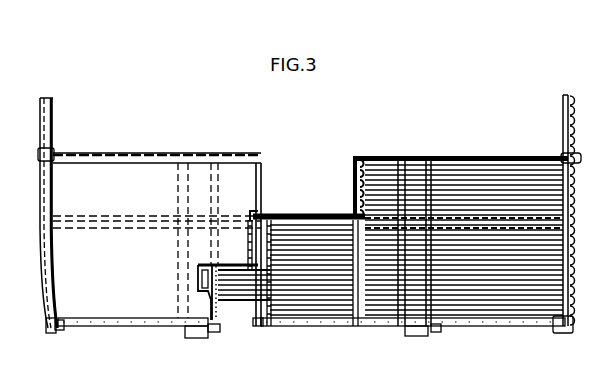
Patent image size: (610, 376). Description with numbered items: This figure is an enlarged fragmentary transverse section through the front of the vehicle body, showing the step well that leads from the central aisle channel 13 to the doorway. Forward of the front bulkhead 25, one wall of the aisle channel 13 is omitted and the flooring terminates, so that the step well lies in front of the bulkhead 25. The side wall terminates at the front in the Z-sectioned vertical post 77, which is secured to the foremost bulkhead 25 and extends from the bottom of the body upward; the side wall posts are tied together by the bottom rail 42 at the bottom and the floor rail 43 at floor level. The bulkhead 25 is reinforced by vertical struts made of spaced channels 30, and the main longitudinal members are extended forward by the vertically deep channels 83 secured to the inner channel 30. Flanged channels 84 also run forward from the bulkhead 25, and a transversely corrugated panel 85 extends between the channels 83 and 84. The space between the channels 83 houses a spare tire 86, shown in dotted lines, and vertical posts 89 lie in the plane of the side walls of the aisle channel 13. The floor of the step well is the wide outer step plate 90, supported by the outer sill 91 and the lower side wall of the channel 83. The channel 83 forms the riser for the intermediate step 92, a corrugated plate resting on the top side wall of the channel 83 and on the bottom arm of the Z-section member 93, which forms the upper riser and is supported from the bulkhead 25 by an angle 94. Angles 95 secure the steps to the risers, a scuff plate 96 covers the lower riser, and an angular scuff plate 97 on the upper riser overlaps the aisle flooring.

The aisle channel 13 is at (268, 205).
The transverse bulkhead 25 is at (524, 326).
The channel 30 is at (421, 150).
The bottom rail 42 is at (560, 318).
The floor rail 43 is at (572, 150).
The vertical post 77 is at (40, 112).
The channel 83 is at (206, 324).
The flanged channel 84 is at (190, 330).
The transversely corrugated panel 85 is at (326, 319).
The spare tire 86 is at (296, 262).
The vertical post 89 is at (250, 316).
The step plate 90 is at (143, 310).
The outer sill 91 is at (50, 326).
The step 92 is at (208, 258).
The Z-section member 93 is at (247, 228).
The angle 94 is at (262, 228).
The angle 95 is at (212, 256).
The scuff plate 96 is at (190, 268).
The angular scuff plate 97 is at (246, 202).